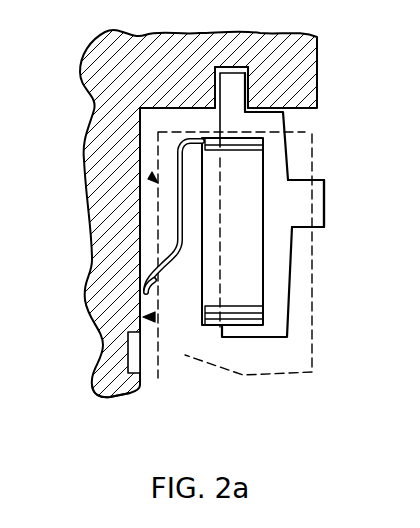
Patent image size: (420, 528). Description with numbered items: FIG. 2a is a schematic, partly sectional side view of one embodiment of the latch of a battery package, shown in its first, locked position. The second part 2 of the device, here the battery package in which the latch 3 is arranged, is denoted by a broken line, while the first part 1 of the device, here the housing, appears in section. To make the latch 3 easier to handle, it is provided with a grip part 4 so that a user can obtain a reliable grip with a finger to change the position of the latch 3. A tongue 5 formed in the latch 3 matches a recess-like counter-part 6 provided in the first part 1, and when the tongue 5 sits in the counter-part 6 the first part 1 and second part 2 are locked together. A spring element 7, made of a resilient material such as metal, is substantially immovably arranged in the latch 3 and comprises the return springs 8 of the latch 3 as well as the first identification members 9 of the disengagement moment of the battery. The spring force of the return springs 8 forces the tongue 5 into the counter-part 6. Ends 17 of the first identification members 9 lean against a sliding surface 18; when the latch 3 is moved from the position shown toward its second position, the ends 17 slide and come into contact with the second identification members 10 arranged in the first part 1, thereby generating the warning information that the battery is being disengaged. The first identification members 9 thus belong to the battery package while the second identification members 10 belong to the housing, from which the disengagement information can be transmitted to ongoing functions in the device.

The first part 1 is at (108, 323).
The second part 2 is at (263, 355).
The latch 3 is at (277, 250).
The grip part 4 is at (318, 198).
The tongue 5 is at (230, 89).
The counter-part 6 is at (317, 56).
The spring element 7 is at (152, 177).
The return springs 8 is at (247, 275).
The first identification members 9 is at (178, 188).
The second identification members 10 is at (97, 390).
The ends 17 is at (143, 290).
The sliding surface 18 is at (153, 317).